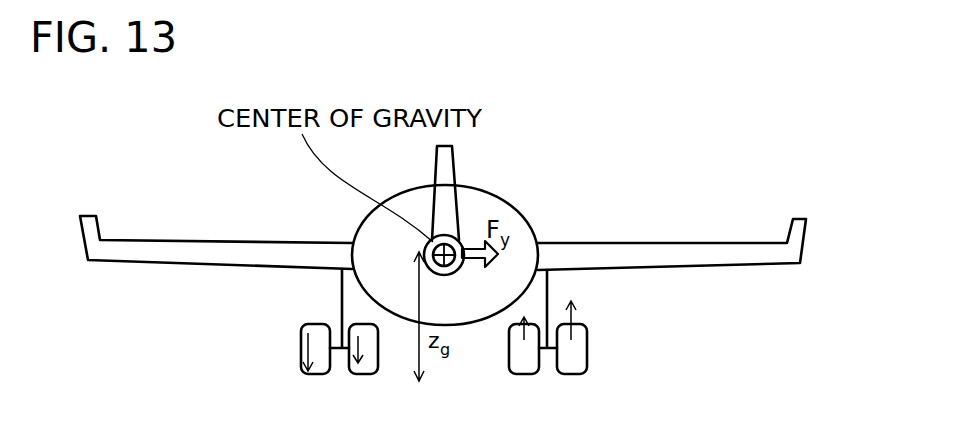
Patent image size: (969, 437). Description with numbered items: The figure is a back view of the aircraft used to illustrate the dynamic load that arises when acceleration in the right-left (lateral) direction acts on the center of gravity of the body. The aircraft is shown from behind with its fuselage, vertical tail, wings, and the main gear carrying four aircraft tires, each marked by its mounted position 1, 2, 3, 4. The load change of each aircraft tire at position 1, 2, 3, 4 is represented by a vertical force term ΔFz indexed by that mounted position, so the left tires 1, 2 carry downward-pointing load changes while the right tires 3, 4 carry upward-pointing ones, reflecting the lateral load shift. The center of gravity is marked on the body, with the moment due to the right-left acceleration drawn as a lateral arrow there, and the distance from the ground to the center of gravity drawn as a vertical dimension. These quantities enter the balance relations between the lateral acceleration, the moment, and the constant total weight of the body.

The left outer wheel (vertical force ΔFz1) 1 is at (307, 372).
The left inner wheel (vertical force ΔFz2) 2 is at (368, 372).
The right inner wheel (vertical force ΔFz3) 3 is at (526, 369).
The right outer wheel (vertical force ΔFz4) 4 is at (583, 361).